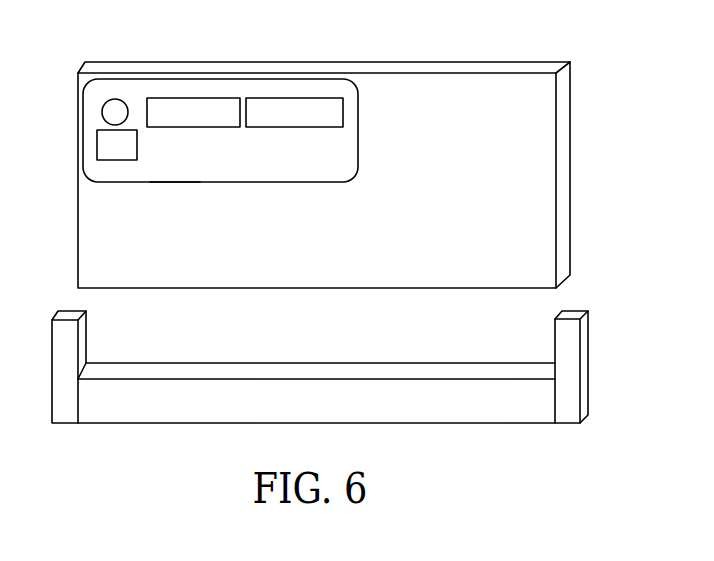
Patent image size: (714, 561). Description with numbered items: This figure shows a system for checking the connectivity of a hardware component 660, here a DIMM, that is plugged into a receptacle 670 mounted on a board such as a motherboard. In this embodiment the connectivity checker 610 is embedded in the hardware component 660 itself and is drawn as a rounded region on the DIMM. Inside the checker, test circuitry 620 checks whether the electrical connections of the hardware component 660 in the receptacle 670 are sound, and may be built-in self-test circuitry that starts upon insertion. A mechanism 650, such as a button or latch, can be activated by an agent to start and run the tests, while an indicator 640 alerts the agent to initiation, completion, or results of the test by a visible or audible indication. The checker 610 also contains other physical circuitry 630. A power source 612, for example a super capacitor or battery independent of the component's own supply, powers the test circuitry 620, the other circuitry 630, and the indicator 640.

The connectivity checker 610 is at (358, 135).
The power source 612 is at (97, 145).
The test circuitry 620 is at (295, 98).
The other physical circuitry 630 is at (176, 182).
The indicator 640 is at (101, 113).
The mechanism 650 is at (188, 98).
The hardware component 660 is at (542, 118).
The receptacle 670 is at (567, 410).